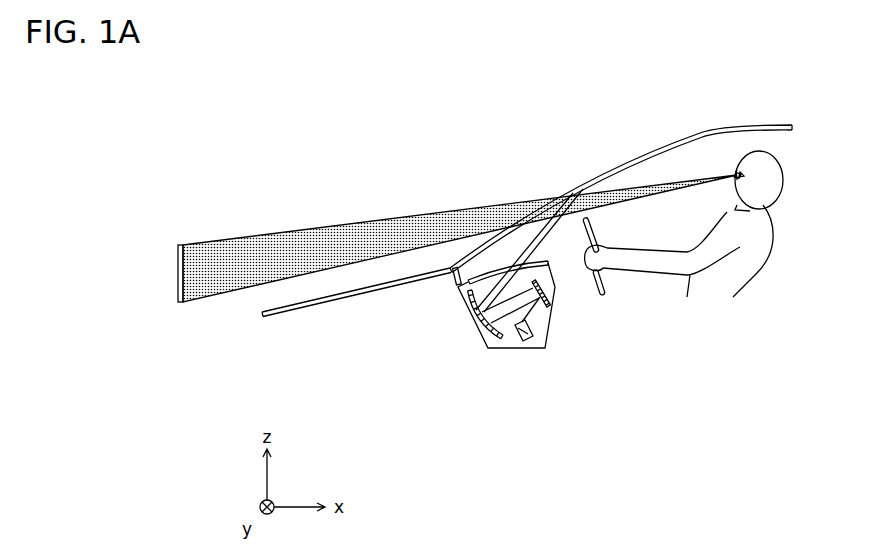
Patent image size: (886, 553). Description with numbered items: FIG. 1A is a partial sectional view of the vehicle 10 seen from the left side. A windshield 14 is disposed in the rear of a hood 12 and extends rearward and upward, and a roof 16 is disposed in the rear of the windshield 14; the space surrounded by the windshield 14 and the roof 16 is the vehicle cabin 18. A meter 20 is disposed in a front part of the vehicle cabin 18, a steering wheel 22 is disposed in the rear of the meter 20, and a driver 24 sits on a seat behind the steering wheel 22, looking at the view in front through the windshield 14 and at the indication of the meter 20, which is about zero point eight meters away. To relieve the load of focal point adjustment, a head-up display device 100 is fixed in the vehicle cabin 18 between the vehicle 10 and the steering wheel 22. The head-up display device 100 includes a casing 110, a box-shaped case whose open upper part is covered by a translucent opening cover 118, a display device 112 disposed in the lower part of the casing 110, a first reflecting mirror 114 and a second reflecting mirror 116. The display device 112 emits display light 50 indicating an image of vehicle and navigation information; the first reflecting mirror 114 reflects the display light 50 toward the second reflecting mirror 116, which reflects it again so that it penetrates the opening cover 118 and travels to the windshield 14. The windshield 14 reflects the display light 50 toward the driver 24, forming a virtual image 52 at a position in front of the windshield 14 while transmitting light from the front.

The vehicle 10 is at (491, 530).
The hood 12 is at (343, 294).
The windshield 14 is at (650, 155).
The roof 16 is at (756, 125).
The vehicle cabin 18 is at (738, 142).
The meter 20 is at (452, 272).
The steering wheel 22 is at (605, 287).
The driver 24 is at (763, 260).
The display light 50 is at (293, 240).
The virtual image 52 is at (178, 273).
The head-up display device 100 is at (499, 350).
The casing 110 is at (548, 337).
The display device 112 is at (522, 340).
The first reflecting mirror 114 is at (552, 288).
The second reflecting mirror 116 is at (476, 318).
The opening cover 118 is at (488, 276).